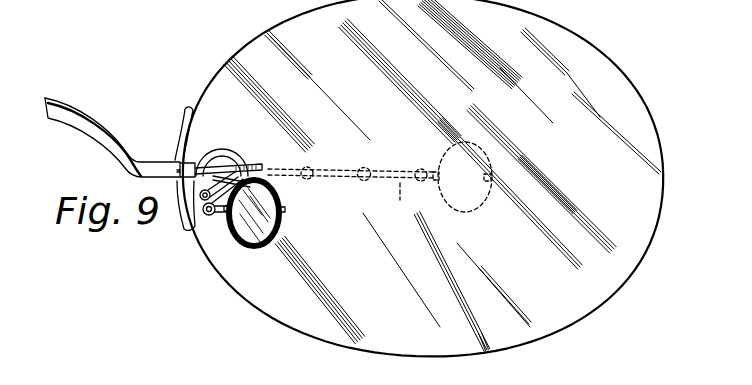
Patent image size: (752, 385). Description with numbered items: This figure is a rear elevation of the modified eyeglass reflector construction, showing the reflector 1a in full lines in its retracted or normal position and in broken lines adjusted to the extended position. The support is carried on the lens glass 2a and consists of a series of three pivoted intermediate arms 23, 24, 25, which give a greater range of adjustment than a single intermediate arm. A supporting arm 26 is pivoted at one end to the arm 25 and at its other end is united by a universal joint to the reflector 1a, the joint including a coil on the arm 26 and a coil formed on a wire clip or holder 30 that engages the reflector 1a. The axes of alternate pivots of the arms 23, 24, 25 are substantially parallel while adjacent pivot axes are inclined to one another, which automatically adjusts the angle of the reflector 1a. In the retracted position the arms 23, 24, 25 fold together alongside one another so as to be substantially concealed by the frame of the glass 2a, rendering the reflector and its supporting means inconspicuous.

The lens glass 2a is at (636, 91).
The reflector 1a is at (280, 229).
The intermediate arm 23 is at (282, 163).
The intermediate arm 24 is at (343, 170).
The intermediate arm 25 is at (400, 202).
The supporting arm 26 is at (211, 212).
The wire clip or holder 30 is at (231, 209).